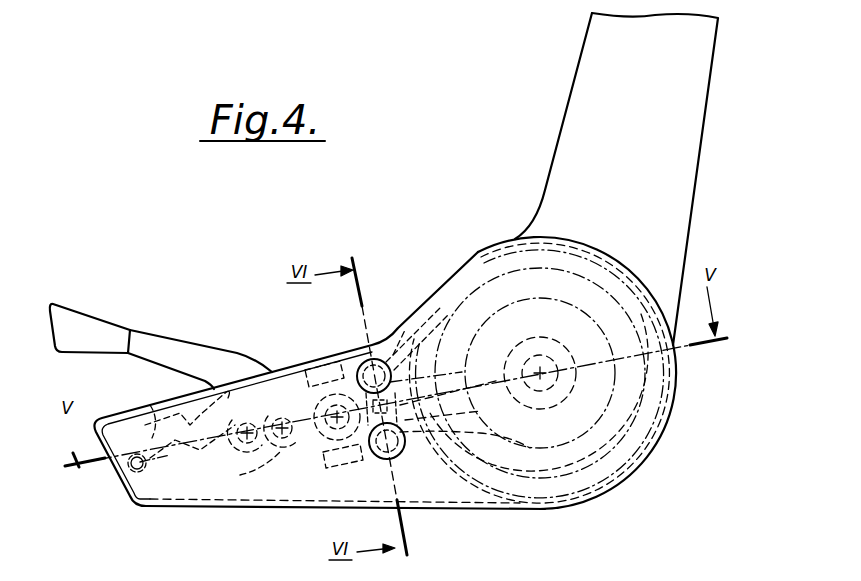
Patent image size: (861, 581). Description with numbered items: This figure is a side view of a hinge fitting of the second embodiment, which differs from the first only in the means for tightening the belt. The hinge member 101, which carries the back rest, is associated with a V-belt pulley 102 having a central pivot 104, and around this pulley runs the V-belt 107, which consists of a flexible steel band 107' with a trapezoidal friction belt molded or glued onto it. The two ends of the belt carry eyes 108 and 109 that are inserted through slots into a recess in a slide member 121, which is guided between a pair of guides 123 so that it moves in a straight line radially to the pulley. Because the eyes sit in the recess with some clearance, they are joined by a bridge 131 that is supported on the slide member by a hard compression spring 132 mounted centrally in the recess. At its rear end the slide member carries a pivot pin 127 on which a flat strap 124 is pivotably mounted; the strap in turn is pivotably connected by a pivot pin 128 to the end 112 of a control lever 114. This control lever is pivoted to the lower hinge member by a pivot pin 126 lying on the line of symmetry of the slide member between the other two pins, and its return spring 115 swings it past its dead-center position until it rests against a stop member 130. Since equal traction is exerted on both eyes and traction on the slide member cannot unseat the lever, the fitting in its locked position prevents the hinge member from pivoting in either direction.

The hinge member 101 is at (585, 95).
The V-belt pulley 102 is at (676, 393).
The pivot hub 104 is at (547, 394).
The V-belt 107 is at (418, 314).
The flexible steel band 107' is at (383, 311).
The eye 108 is at (362, 360).
The eye 109 is at (370, 460).
The end of control lever 112 is at (238, 458).
The control lever 114 is at (150, 343).
The return spring 115 is at (153, 423).
The slide member 121 is at (468, 414).
The guides 123 is at (322, 368).
The flat strap 124 is at (280, 415).
The pivot pin 126 is at (265, 470).
The pivot pin 127 is at (337, 460).
The pivot pin 128 is at (246, 418).
The stop member 130 is at (228, 460).
The bridge 131 is at (468, 436).
The compression spring 132 is at (460, 372).